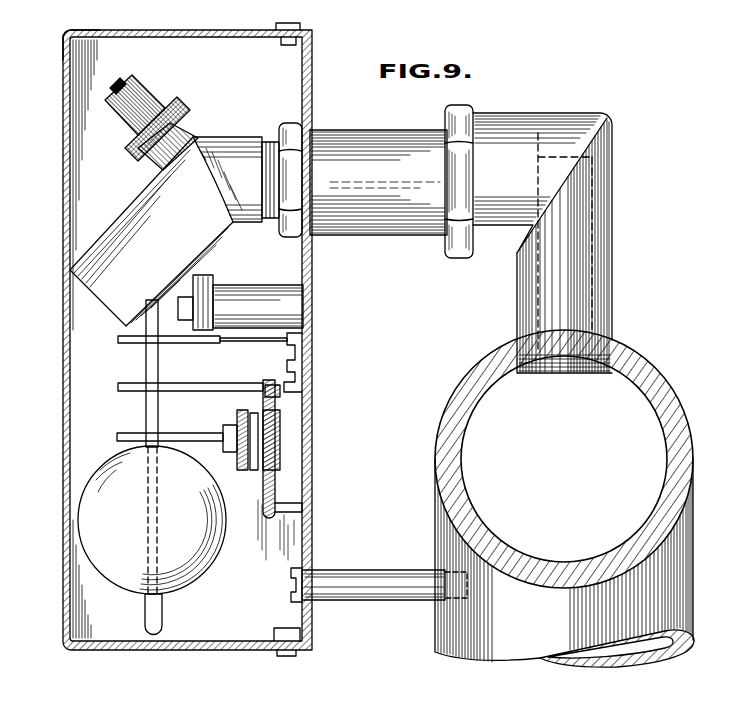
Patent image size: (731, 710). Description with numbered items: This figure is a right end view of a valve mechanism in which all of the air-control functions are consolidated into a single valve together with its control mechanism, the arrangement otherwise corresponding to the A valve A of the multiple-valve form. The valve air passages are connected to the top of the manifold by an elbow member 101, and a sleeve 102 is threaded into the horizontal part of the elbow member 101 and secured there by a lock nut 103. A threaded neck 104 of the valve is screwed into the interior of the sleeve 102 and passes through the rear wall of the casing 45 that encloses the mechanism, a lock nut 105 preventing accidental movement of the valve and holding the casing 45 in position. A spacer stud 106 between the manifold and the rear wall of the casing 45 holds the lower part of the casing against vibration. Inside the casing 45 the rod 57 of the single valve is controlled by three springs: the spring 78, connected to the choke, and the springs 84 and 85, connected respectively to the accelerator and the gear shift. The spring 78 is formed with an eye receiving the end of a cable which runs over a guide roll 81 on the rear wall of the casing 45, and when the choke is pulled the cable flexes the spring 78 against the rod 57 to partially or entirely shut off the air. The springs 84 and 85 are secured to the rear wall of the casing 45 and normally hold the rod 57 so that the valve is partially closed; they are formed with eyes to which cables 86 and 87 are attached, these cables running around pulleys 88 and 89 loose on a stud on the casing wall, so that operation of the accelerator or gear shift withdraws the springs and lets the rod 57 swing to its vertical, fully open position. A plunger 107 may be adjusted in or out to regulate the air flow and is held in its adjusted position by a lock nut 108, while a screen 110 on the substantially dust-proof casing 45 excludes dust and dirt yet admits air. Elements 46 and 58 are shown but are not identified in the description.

The screen 110 is at (104, 33).
The casing 45 is at (312, 262).
The valve body 46 is at (103, 288).
The A valve A is at (128, 232).
The plunger 107 is at (136, 96).
The lock nut 108 is at (183, 100).
The threaded neck 104 is at (272, 143).
The lock nut 105 is at (288, 238).
The sleeve 102 is at (365, 158).
The lock nut 103 is at (455, 260).
The elbow member 101 is at (614, 220).
The guide roll 81 is at (213, 281).
The spring 78 is at (183, 344).
The rod 57 is at (148, 360).
The spring 85 is at (170, 392).
The spring 84 is at (176, 433).
The pulley 89 is at (237, 416).
The cable 86 is at (245, 471).
The cable 87 is at (278, 405).
The pulley 88 is at (280, 467).
The float 58 is at (208, 568).
The spacer stud 106 is at (362, 571).